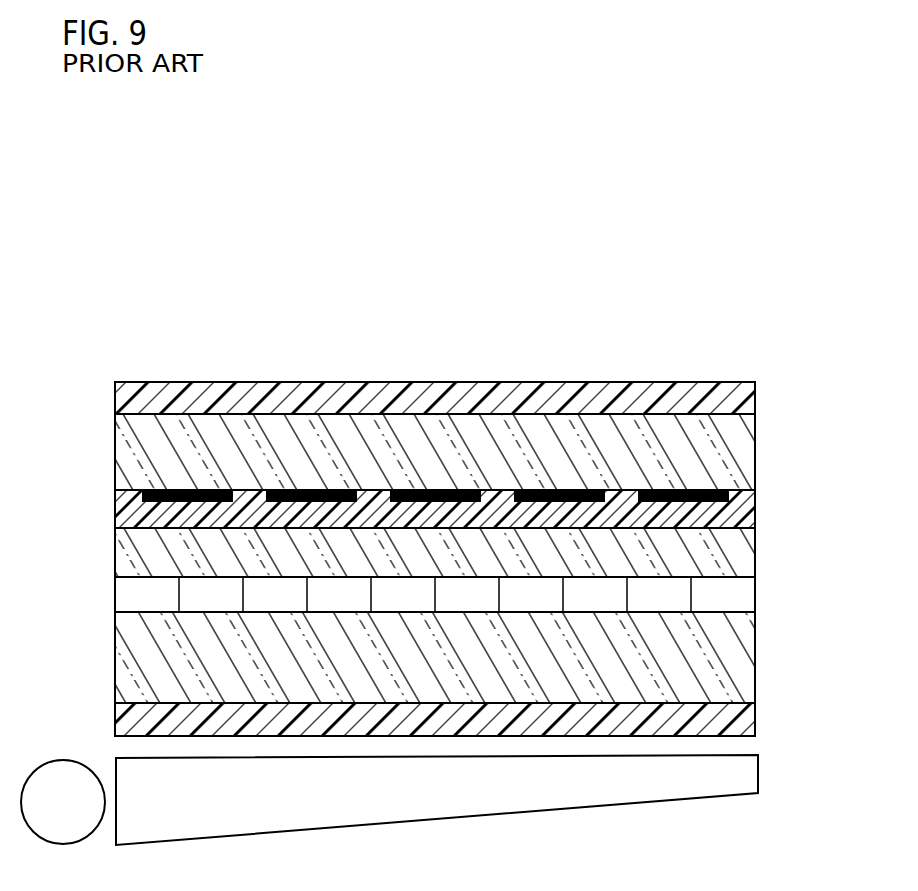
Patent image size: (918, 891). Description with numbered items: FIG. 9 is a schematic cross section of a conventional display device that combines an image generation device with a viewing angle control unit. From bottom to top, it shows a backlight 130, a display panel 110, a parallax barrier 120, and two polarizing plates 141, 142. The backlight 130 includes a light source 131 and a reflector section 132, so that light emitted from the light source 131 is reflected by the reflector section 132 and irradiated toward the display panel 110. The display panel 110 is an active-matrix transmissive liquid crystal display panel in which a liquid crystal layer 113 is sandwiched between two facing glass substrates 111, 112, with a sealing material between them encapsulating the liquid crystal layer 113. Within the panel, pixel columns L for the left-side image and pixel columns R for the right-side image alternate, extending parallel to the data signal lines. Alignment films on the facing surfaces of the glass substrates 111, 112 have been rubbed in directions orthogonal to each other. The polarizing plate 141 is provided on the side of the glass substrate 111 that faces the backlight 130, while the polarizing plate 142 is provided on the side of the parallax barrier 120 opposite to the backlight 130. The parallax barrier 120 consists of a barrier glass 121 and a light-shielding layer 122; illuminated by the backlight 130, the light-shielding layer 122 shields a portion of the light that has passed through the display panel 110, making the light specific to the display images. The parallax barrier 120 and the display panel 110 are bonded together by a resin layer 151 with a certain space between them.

The display panel 110 is at (500, 631).
The glass substrate 111 is at (752, 672).
The glass substrate 112 is at (752, 545).
The liquid crystal layer 113 is at (752, 592).
The parallax barrier 120 is at (504, 455).
The barrier glass 121 is at (752, 450).
The light-shielding layer 122 is at (690, 489).
The backlight 130 is at (444, 789).
The light source 131 is at (64, 770).
The reflector section 132 is at (752, 778).
The polarizing plate 141 is at (470, 719).
The polarizing plate 142 is at (752, 398).
The resin layer 151 is at (752, 516).